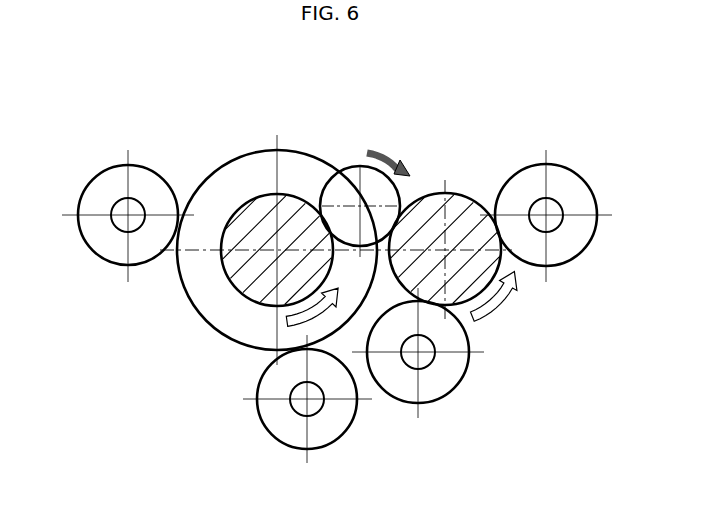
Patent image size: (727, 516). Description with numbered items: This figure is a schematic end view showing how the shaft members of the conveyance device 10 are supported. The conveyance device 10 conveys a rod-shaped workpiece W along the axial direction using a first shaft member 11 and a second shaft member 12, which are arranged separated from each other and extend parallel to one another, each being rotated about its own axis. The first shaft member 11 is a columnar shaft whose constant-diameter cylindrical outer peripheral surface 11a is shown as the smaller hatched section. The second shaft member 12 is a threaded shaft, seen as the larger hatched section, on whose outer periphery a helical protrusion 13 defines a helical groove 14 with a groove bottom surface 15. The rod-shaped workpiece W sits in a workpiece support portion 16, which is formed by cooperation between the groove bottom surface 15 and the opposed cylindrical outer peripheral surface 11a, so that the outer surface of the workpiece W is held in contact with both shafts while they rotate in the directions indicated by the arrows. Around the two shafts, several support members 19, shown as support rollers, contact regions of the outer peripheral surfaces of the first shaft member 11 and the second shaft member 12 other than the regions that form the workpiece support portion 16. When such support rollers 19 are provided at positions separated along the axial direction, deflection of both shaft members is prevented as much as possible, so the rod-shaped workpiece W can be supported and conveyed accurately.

The conveyance device 10 is at (530, 112).
The first shaft member 11 is at (457, 194).
The outer peripheral surface 11a is at (486, 203).
The second shaft member 12 is at (190, 307).
The helical protrusion 13 is at (294, 168).
The helical groove 14 is at (254, 196).
The groove bottom surface 15 is at (232, 297).
The workpiece support portion 16 is at (408, 194).
The rod-shaped workpiece W is at (353, 183).
The support member 19 is at (103, 190).